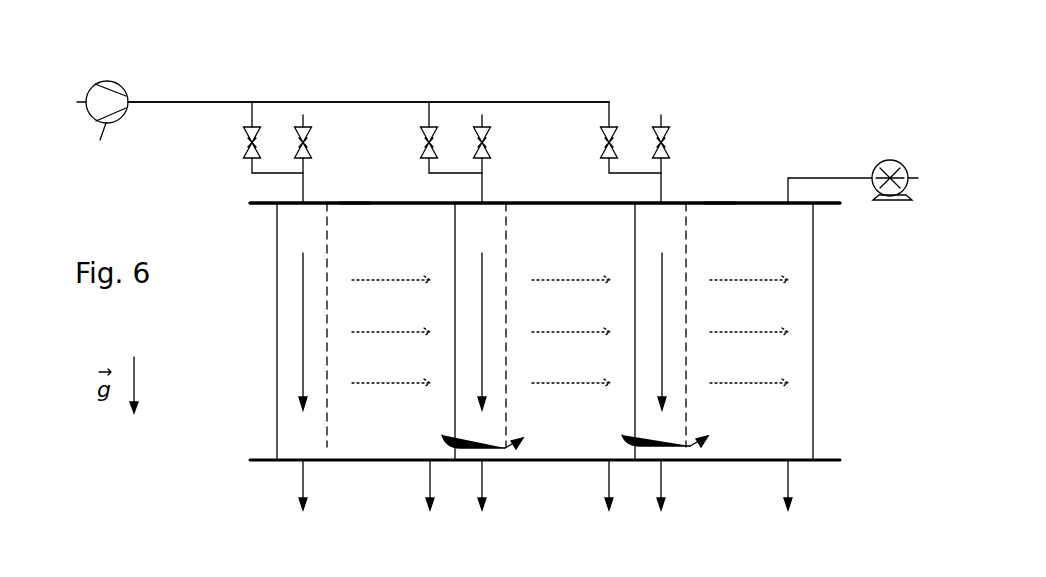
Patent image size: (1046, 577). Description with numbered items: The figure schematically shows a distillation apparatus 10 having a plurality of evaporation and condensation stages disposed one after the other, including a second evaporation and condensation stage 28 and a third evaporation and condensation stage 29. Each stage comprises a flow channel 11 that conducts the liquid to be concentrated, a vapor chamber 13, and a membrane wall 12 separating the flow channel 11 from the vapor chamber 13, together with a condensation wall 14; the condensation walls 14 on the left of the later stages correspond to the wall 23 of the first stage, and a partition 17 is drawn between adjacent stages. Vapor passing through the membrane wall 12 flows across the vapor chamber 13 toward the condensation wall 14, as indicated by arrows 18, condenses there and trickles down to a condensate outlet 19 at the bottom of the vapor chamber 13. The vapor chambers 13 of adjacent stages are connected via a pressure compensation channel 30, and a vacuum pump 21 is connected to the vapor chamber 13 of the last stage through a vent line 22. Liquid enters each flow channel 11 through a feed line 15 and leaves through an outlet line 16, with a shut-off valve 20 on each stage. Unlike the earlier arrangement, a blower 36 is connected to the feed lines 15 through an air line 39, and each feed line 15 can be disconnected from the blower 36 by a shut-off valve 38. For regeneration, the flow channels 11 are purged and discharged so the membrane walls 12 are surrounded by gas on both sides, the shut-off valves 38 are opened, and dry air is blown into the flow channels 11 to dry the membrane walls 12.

The distillation apparatus 10 is at (462, 74).
The flow channel 11 is at (303, 290).
The membrane wall 12 is at (328, 290).
The vapor chamber 13 is at (377, 243).
The condensation wall 14 is at (813, 332).
The feed line 15 is at (303, 115).
The outlet line 16 is at (308, 470).
The partition wall 17 is at (453, 372).
The arrows 18 is at (390, 388).
The condensate outlet 19 is at (425, 470).
The shut-off valve 20 is at (312, 147).
The vacuum pump 21 is at (890, 200).
The vent line 22 is at (813, 178).
The wall 23 is at (277, 388).
The second evaporation and condensation stage 28 is at (537, 203).
The third evaporation and condensation stage 29 is at (355, 203).
The pressure compensation channel 30 is at (467, 448).
The blower 36 is at (343, 125).
The shut-off valve 38 is at (240, 147).
The air line 39 is at (235, 100).